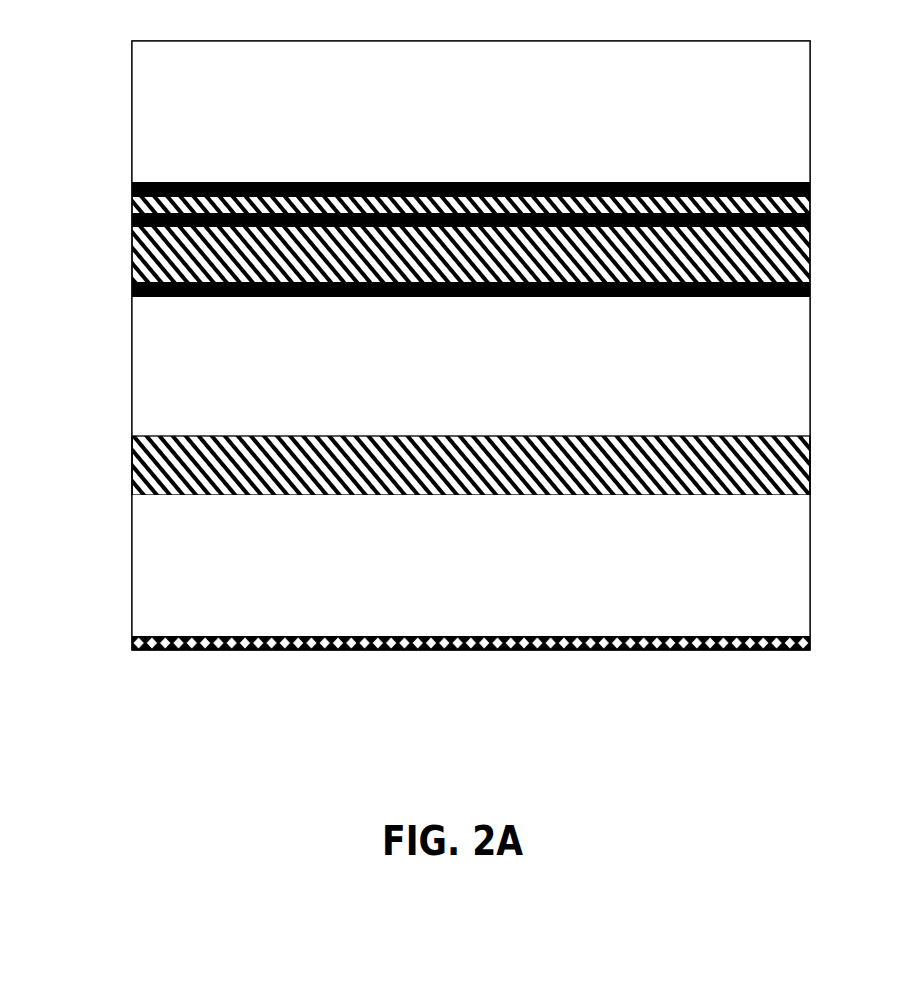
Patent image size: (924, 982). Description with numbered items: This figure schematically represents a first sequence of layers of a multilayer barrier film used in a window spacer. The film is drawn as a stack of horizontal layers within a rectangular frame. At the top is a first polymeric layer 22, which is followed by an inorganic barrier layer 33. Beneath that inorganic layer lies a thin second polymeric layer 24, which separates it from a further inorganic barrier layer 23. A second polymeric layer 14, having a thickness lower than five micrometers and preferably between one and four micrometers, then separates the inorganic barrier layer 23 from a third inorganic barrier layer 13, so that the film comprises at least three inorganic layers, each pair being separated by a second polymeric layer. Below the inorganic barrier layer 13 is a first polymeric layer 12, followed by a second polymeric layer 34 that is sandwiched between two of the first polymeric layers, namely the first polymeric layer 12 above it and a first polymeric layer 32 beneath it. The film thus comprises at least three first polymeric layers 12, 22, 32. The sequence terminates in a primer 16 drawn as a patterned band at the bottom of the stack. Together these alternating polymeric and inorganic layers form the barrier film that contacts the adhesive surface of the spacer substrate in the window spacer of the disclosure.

The first polymeric layer 22 is at (143, 66).
The inorganic barrier layer 33 is at (132, 185).
The second polymeric layer 24 is at (793, 202).
The inorganic barrier layer 23 is at (132, 217).
The second polymeric layer 14 is at (797, 243).
The inorganic barrier layer 13 is at (132, 287).
The first polymeric layer 12 is at (143, 393).
The second polymeric layer 34 is at (793, 472).
The first polymeric layer 32 is at (143, 576).
The primer 16 is at (797, 645).